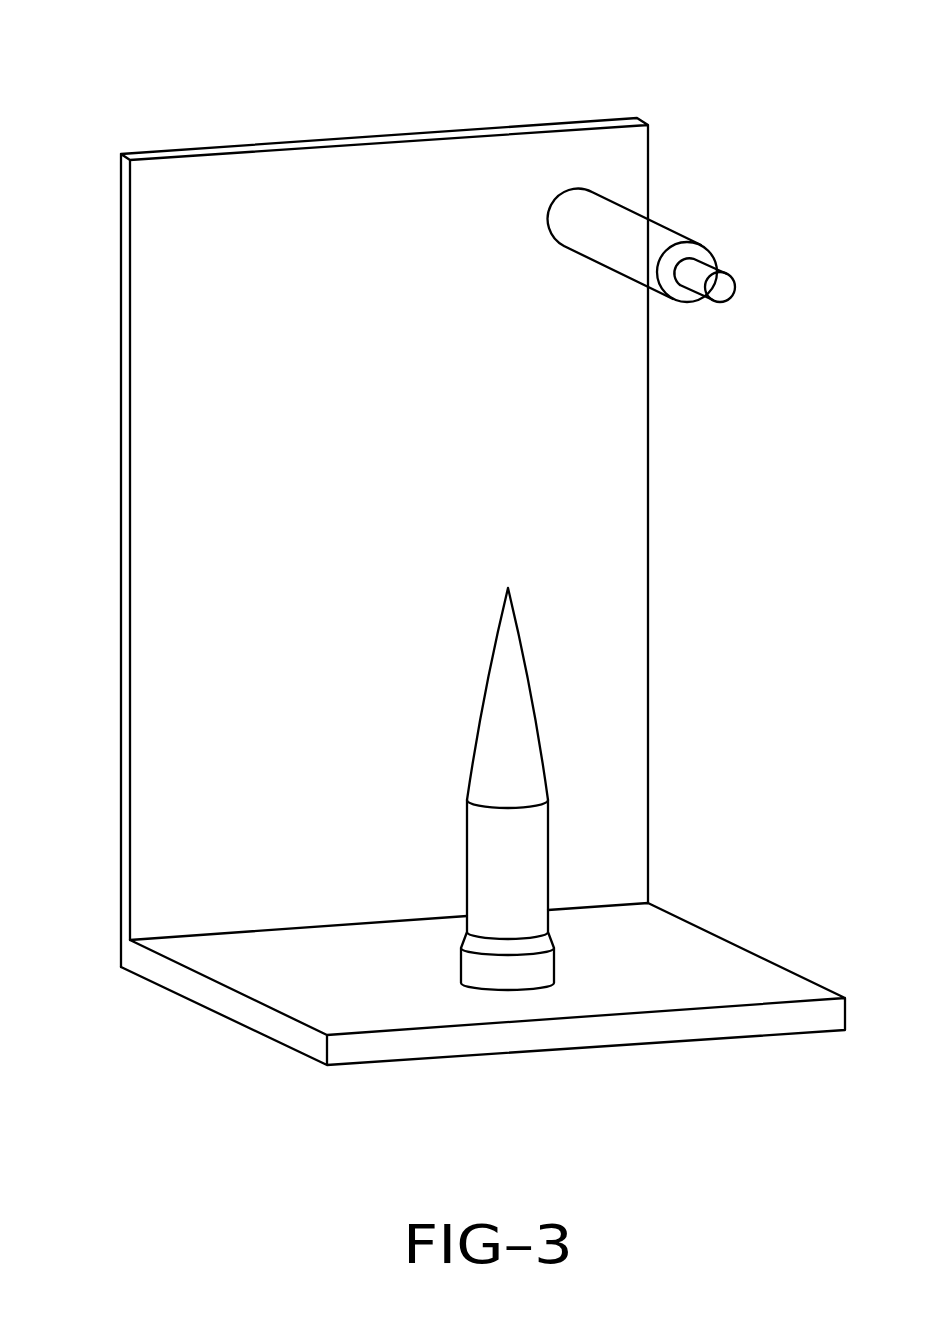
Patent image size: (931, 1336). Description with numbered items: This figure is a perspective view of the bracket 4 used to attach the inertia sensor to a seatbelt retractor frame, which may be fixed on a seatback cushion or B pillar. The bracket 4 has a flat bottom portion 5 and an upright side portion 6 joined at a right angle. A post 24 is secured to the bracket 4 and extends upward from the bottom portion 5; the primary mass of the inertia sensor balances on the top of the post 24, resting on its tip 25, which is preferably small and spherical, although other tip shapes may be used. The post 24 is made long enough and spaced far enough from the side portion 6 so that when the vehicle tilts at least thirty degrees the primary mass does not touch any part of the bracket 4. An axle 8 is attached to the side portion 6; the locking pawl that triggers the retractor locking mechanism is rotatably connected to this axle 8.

The bracket 4 is at (456, 549).
The bottom portion 5 is at (272, 975).
The side portion 6 is at (187, 550).
The axle 8 is at (648, 240).
The post 24 is at (517, 867).
The tip 25 is at (510, 587).